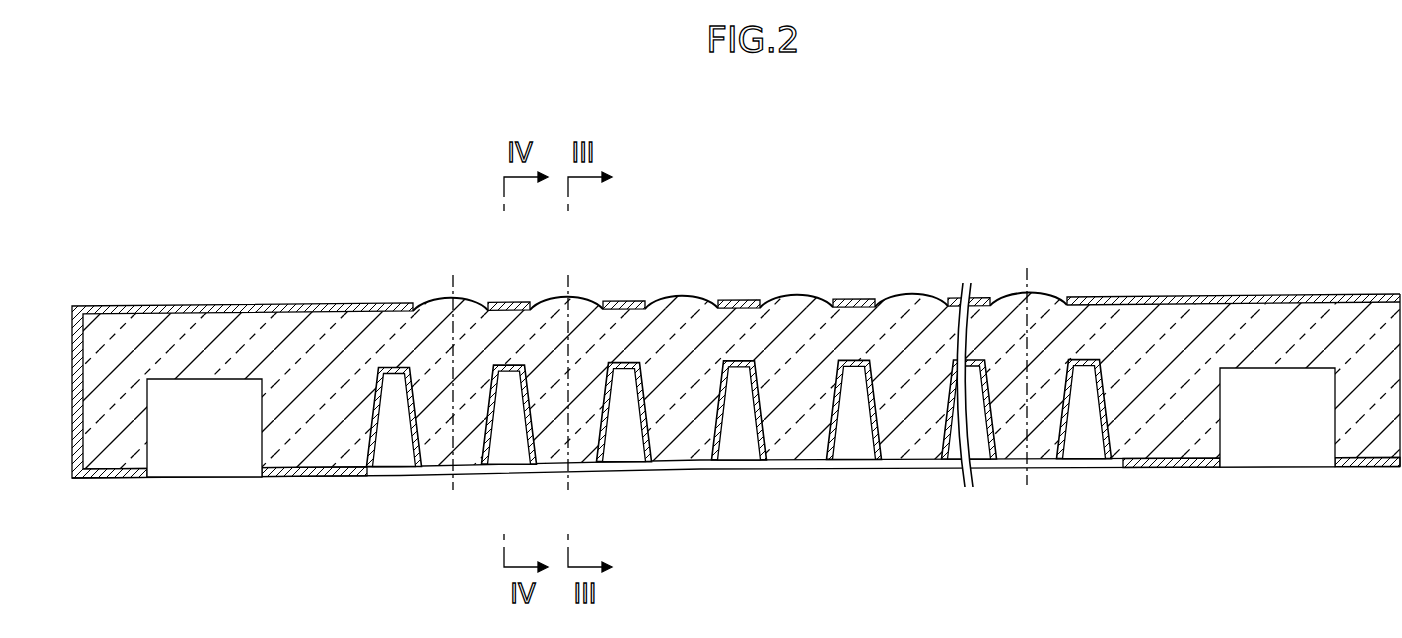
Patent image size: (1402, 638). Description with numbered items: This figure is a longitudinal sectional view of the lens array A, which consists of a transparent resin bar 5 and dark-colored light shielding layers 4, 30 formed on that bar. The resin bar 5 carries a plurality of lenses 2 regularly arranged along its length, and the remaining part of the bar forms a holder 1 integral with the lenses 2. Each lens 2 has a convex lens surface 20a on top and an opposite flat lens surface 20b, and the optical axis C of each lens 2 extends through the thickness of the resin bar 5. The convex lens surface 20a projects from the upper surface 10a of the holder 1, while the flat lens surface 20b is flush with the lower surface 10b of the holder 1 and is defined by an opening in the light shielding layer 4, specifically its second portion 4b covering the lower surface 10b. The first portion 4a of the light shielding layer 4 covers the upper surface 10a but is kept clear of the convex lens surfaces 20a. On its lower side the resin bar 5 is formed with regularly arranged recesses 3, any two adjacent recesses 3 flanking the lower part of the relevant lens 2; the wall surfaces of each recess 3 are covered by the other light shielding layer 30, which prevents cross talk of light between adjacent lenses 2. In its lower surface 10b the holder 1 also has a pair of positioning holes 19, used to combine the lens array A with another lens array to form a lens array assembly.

The holder 1 is at (1187, 340).
The lens 2 is at (430, 318).
The recess 3 is at (382, 455).
The light shielding layer 4 is at (831, 403).
The first portion 4a is at (856, 298).
The second portion 4b is at (1127, 468).
The transparent resin bar 5 is at (297, 343).
The upper surface 10a is at (1137, 300).
The lower surface 10b is at (1148, 466).
The positioning hole 19 is at (205, 462).
The convex lens surface 20a is at (466, 300).
The flat lens surface 20b is at (432, 474).
The light shielding layer 30 is at (403, 440).
The lens array A is at (1293, 168).
The optical axis C is at (452, 285).